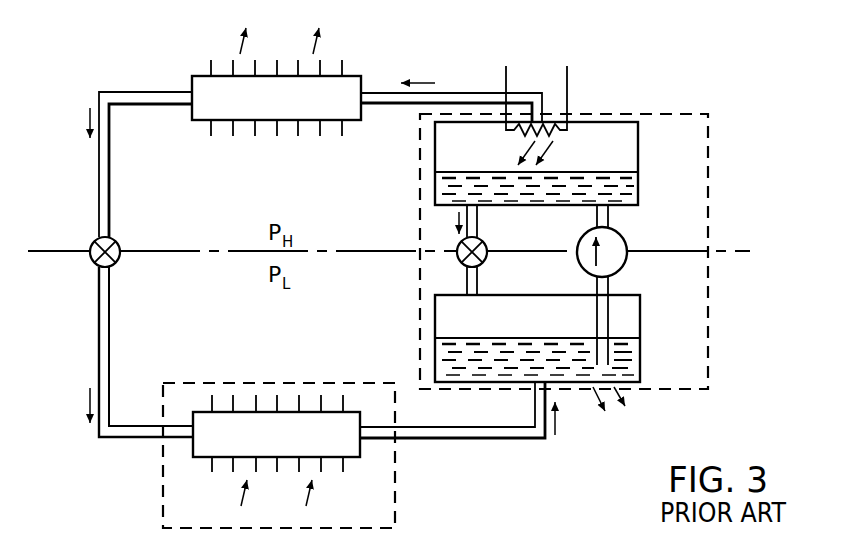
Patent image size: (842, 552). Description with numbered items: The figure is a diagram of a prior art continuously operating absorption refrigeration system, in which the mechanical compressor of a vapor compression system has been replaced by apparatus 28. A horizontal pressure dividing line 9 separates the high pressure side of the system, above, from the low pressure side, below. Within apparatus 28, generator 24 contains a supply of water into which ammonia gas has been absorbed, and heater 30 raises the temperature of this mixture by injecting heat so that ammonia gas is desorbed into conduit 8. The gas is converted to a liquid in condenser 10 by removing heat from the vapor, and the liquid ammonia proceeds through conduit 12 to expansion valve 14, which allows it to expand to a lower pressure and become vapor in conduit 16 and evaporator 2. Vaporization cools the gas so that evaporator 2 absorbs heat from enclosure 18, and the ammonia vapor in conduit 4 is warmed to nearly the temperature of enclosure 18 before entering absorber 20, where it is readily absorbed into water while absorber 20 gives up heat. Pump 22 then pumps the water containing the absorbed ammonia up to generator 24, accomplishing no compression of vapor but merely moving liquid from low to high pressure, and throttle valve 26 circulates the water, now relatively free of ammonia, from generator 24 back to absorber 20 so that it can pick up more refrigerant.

The evaporator 2 is at (361, 412).
The conduit 4 is at (535, 439).
The conduit 8 is at (458, 91).
The pressure dividing line 9 is at (50, 250).
The condenser 10 is at (362, 78).
The conduit 12 is at (126, 88).
The expansion valve 14 is at (113, 246).
The conduit 16 is at (127, 440).
The enclosure 18 is at (395, 511).
The absorber 20 is at (641, 335).
The pump 22 is at (627, 245).
The generator 24 is at (640, 162).
The throttle valve 26 is at (482, 243).
The apparatus 28 is at (672, 114).
The heater 30 is at (563, 136).